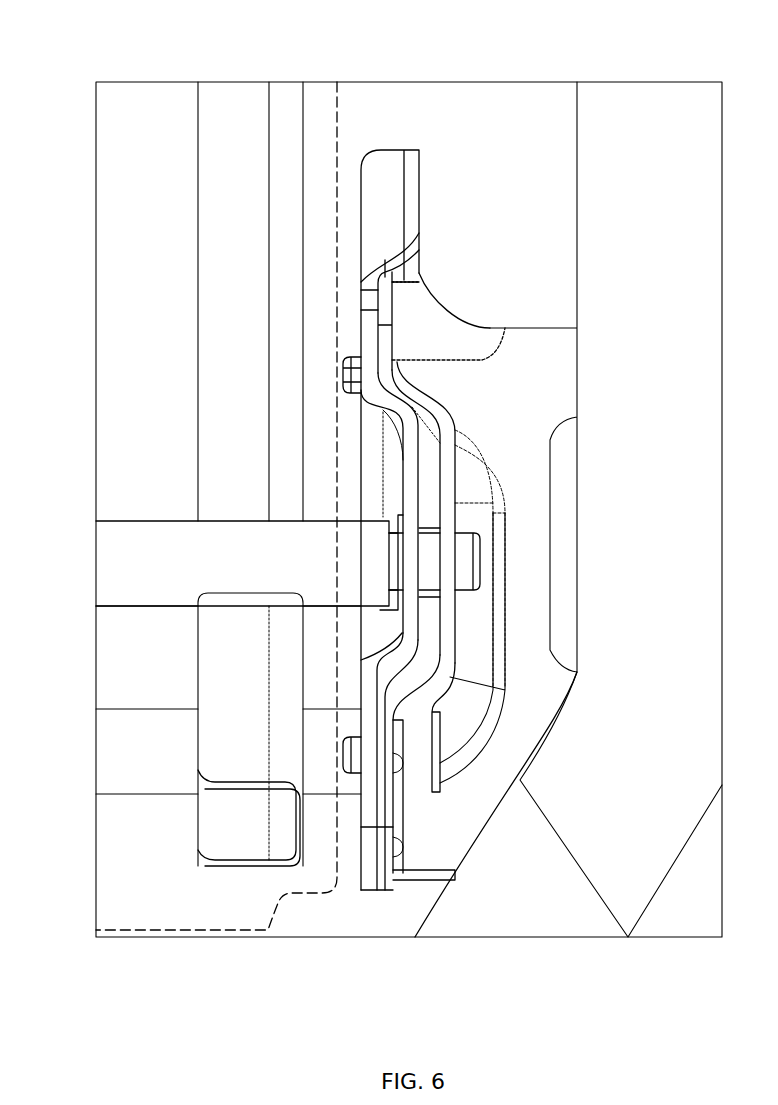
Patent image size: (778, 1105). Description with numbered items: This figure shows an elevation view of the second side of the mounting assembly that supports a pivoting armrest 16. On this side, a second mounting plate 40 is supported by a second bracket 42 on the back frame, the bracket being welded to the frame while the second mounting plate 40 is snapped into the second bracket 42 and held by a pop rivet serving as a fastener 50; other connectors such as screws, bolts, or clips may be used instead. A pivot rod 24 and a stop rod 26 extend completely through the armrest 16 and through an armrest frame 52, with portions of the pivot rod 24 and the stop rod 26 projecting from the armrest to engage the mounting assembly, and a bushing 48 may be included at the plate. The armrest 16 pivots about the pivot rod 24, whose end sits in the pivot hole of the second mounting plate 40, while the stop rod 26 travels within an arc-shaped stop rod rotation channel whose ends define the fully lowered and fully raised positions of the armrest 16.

The armrest 16 is at (155, 146).
The armrest frame 52 is at (246, 234).
The second bracket 42 is at (397, 173).
The second mounting plate 40 is at (385, 302).
The fastener 50 is at (345, 371).
The bushing 48 is at (430, 566).
The pivot rod 24 is at (115, 550).
The stop rod 26 is at (113, 758).